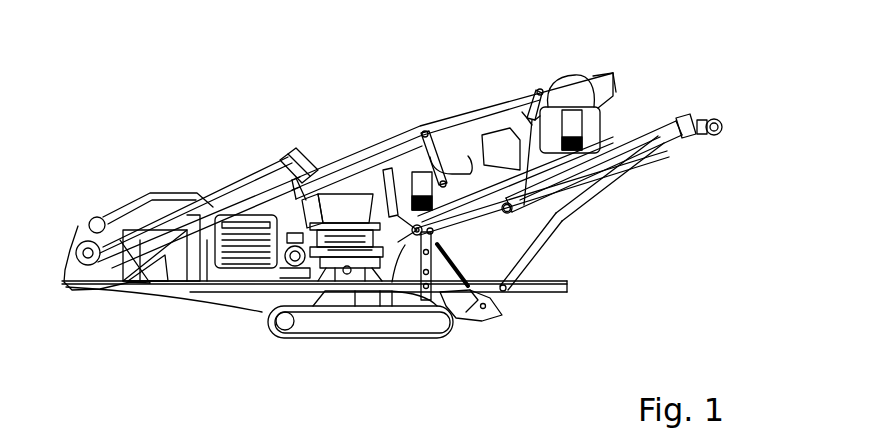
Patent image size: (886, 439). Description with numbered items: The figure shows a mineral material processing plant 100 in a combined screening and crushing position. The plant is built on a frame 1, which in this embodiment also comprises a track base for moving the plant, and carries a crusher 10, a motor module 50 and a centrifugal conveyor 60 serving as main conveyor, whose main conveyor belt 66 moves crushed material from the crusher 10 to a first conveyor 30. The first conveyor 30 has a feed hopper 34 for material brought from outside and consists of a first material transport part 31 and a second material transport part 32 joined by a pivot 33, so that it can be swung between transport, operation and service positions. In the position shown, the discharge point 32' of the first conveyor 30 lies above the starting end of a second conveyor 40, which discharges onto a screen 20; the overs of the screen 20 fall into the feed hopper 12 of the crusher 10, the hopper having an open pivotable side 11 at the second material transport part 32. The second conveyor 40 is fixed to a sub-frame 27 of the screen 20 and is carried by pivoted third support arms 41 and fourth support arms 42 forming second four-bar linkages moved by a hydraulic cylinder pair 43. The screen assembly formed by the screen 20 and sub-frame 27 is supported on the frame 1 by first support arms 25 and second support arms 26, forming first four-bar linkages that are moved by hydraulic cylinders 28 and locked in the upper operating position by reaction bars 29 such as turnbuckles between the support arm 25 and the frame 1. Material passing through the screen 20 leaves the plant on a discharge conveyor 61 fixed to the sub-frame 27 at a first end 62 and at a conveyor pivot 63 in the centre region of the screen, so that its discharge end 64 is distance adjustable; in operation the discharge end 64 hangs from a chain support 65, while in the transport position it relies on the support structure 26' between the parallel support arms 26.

The mineral material processing plant 100 is at (342, 40).
The frame 1 is at (260, 312).
The crusher 10 is at (346, 292).
The open pivotable side 11 is at (316, 194).
The feed hopper 12 is at (349, 205).
The screen 20 is at (613, 78).
The first support arms 25 is at (422, 255).
The second support arms 26 is at (545, 275).
The support structure 26' is at (610, 196).
The sub-frame 27 is at (566, 160).
The hydraulic cylinders 28 is at (470, 310).
The reaction bar (turnbuckle) locking 29 is at (446, 252).
The first conveyor 30 is at (193, 146).
The first material transport part 31 is at (163, 220).
The second material transport part 32 is at (206, 187).
The discharge point 32' is at (303, 133).
The pivot 33 is at (207, 213).
The feed hopper 34 is at (137, 208).
The second conveyor 40 is at (490, 110).
The third support arms 41 is at (422, 148).
The fourth support arms 42 is at (540, 90).
The hydraulic cylinder pair 43 is at (445, 172).
The motor module 50 is at (207, 242).
The centrifugal conveyor (main conveyor) 60 is at (92, 290).
The discharge conveyor 61 is at (627, 158).
The first end 62 is at (412, 238).
The conveyor pivot 63 is at (507, 210).
The discharge end 64 is at (709, 119).
The support (chain) 65 is at (669, 130).
The main conveyor belt 66 is at (162, 258).